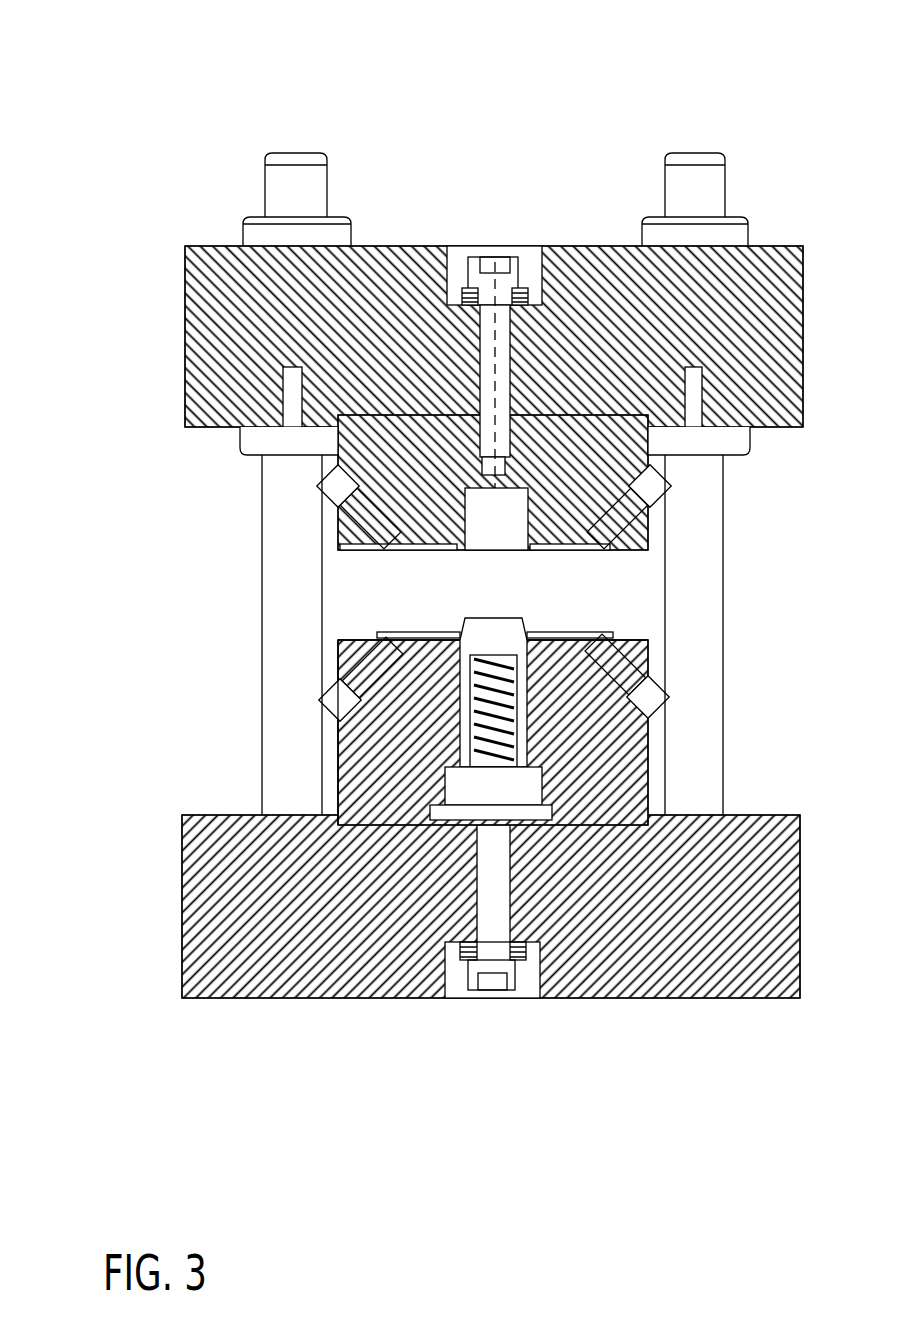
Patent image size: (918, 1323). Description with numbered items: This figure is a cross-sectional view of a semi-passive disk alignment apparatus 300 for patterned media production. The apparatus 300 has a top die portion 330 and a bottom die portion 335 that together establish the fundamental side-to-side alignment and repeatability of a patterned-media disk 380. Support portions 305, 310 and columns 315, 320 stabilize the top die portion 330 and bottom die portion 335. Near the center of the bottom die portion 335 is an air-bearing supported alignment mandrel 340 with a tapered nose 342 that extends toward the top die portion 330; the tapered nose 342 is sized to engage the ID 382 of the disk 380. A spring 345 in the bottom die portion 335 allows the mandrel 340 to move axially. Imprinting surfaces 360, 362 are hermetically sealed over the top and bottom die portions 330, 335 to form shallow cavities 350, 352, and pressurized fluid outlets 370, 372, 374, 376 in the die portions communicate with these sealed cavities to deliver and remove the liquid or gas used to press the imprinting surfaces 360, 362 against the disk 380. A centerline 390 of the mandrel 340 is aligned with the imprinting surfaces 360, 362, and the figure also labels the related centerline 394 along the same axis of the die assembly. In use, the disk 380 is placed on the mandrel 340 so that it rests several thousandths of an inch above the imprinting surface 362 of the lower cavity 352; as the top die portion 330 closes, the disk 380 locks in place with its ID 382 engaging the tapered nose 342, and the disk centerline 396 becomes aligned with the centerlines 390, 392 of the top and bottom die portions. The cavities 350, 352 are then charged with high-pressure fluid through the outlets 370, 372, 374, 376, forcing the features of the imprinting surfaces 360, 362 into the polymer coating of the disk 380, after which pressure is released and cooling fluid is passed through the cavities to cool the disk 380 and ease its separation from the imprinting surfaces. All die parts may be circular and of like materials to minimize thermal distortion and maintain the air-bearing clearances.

The apparatus 300 is at (693, 73).
The support portion 305 is at (213, 289).
The support portion 310 is at (210, 927).
The column 315 is at (278, 473).
The column 320 is at (712, 485).
The top die portion 330 is at (335, 433).
The bottom die portion 335 is at (336, 758).
The air-bearing supported alignment mandrel 340 is at (545, 772).
The tapered nose 342 is at (523, 618).
The spring 345 is at (553, 806).
The shallow cavity 350 is at (335, 543).
The shallow cavity 352 is at (333, 640).
The imprinting surface 360 is at (340, 550).
The imprinting surface 362 is at (375, 633).
The pressurized fluid outlet 370 is at (313, 487).
The pressurized fluid outlet 372 is at (653, 510).
The pressurized fluid outlet 374 is at (320, 697).
The pressurized fluid outlet 376 is at (667, 694).
The disk 380 is at (595, 633).
The ID 382 is at (533, 633).
The centerline 390 is at (495, 280).
The centerline 392 is at (495, 405).
The bolt end block 394 is at (496, 519).
The centerline 396 is at (495, 296).